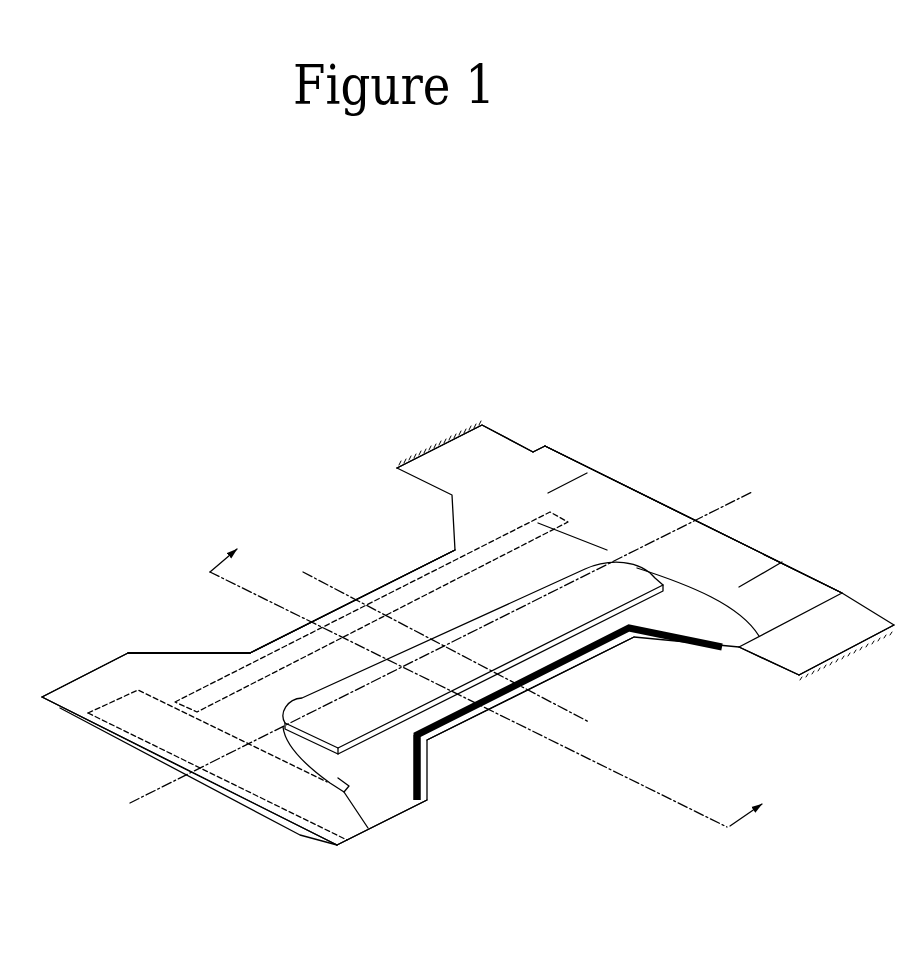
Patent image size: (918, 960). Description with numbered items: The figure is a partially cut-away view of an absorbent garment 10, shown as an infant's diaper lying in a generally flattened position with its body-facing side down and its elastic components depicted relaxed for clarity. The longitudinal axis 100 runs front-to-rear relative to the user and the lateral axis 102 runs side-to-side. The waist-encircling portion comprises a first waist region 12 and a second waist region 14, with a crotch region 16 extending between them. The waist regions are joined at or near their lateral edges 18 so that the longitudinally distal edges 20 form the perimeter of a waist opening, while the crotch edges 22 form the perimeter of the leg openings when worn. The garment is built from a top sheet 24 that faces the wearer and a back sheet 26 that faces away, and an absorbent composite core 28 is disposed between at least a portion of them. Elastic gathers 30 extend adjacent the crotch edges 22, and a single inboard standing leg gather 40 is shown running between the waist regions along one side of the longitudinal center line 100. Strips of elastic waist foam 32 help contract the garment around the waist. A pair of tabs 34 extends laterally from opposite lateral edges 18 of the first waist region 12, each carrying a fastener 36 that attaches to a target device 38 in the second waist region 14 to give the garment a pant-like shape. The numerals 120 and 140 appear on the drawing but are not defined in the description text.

The absorbent garment 10 is at (171, 537).
The first waist region 12 is at (757, 512).
The second waist region 14 is at (314, 872).
The crotch region 16 is at (585, 754).
The lateral edges 18 is at (521, 452).
The longitudinally distal edges 20 is at (662, 498).
The crotch edges 22 is at (379, 587).
The top sheet 24 is at (383, 765).
The back sheet 26 is at (297, 679).
The absorbent composite core 28 is at (572, 607).
The elastic gathers 30 is at (568, 668).
The elastic waist foam 32 is at (346, 785).
The tabs 34 is at (481, 445).
The fastener 36 is at (408, 475).
The target device 38 is at (120, 722).
The standing leg gathers 40 is at (558, 516).
The longitudinal axis 100 is at (424, 654).
The lateral axis 102 is at (436, 637).
The panel 120 is at (560, 462).
The panel 140 is at (88, 690).